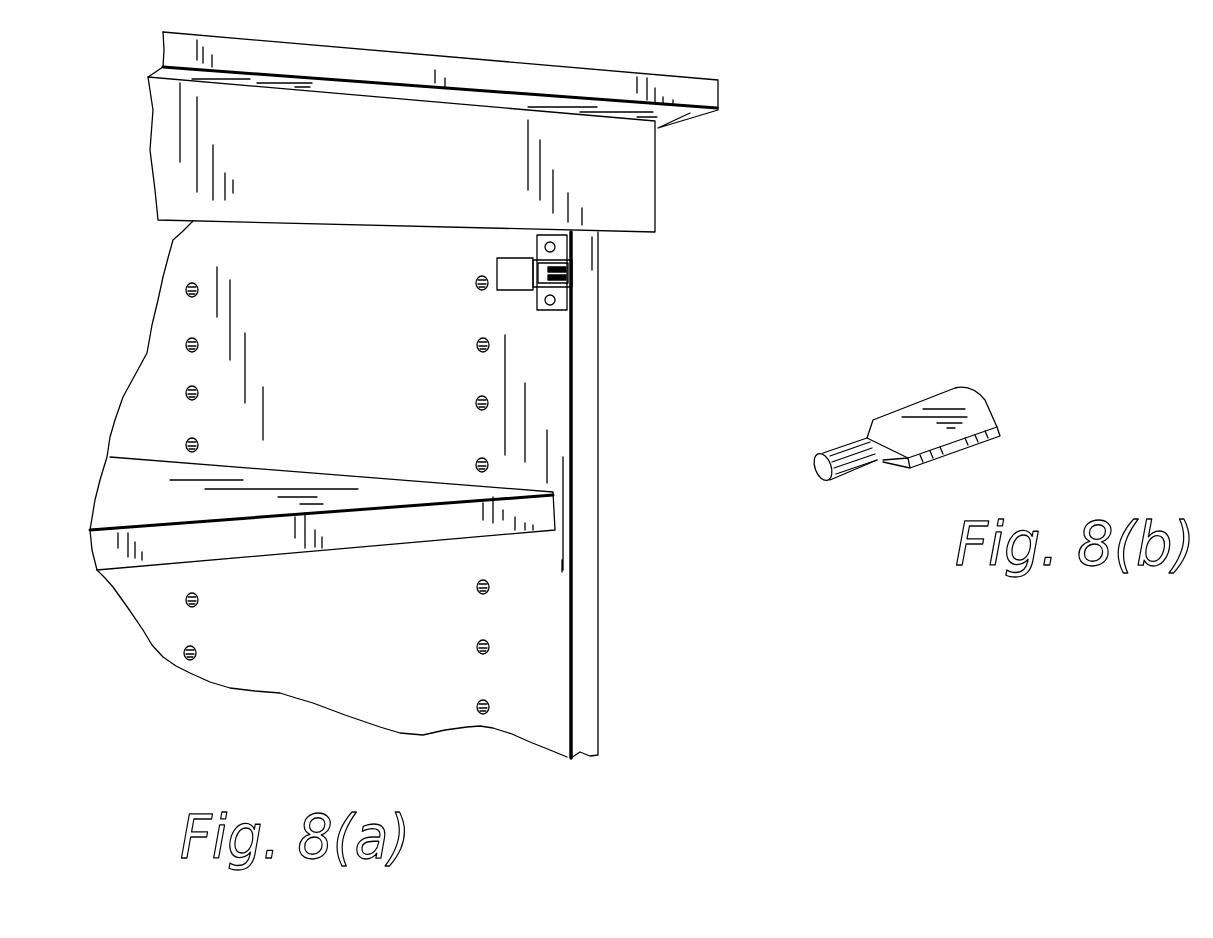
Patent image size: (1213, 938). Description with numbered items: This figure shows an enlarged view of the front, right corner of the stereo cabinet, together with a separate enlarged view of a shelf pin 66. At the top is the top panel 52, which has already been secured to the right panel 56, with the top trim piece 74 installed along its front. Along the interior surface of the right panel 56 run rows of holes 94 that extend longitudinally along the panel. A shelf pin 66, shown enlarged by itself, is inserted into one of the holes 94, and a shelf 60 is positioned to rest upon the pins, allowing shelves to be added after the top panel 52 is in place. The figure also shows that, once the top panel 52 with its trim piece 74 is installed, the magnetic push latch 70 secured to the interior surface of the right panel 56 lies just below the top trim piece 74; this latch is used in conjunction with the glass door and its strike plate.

In FIG. 8A, the top panel 52 is at (497, 73).
In FIG. 8A, the top trim piece 74 is at (362, 163).
In FIG. 8A, the right panel 56 is at (340, 336).
In FIG. 8A, the shelf 60 is at (372, 492).
In FIG. 8A, the magnetic push latch 70 is at (510, 272).
In FIG. 8A, the holes 94 is at (185, 343).
In FIG. 8B, the shelf pin 66 is at (962, 398).